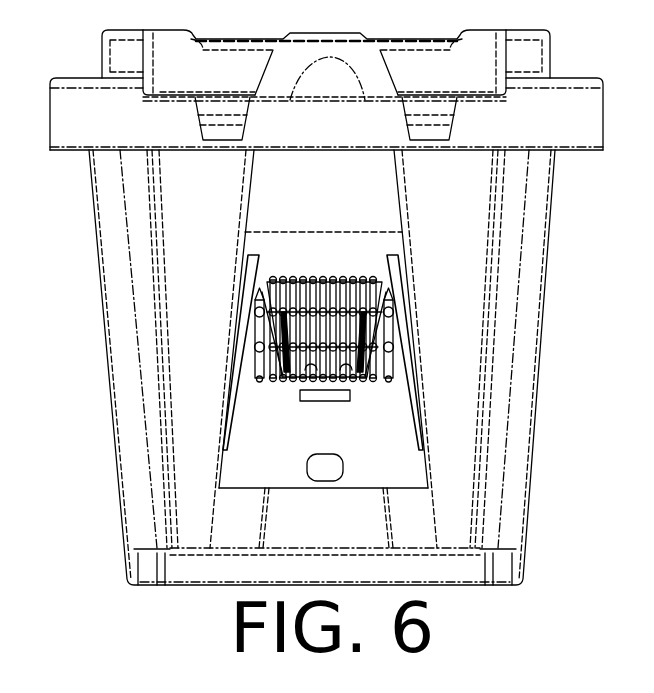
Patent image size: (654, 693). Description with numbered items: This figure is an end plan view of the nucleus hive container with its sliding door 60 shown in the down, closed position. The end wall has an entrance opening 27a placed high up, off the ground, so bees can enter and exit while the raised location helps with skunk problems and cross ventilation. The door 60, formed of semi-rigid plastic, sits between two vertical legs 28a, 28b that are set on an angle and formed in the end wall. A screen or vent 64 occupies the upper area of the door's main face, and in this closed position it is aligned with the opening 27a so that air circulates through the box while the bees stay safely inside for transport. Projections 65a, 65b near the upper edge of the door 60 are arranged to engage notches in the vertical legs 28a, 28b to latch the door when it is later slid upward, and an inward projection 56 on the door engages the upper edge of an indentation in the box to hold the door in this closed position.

The vertical leg 28a is at (248, 208).
The vertical leg 28b is at (402, 202).
The projection 65a is at (253, 243).
The projection 65b is at (393, 243).
The opening 27a is at (318, 323).
The screen or vent 64 is at (360, 310).
The door 60 is at (270, 402).
The inward projection 56 is at (350, 397).